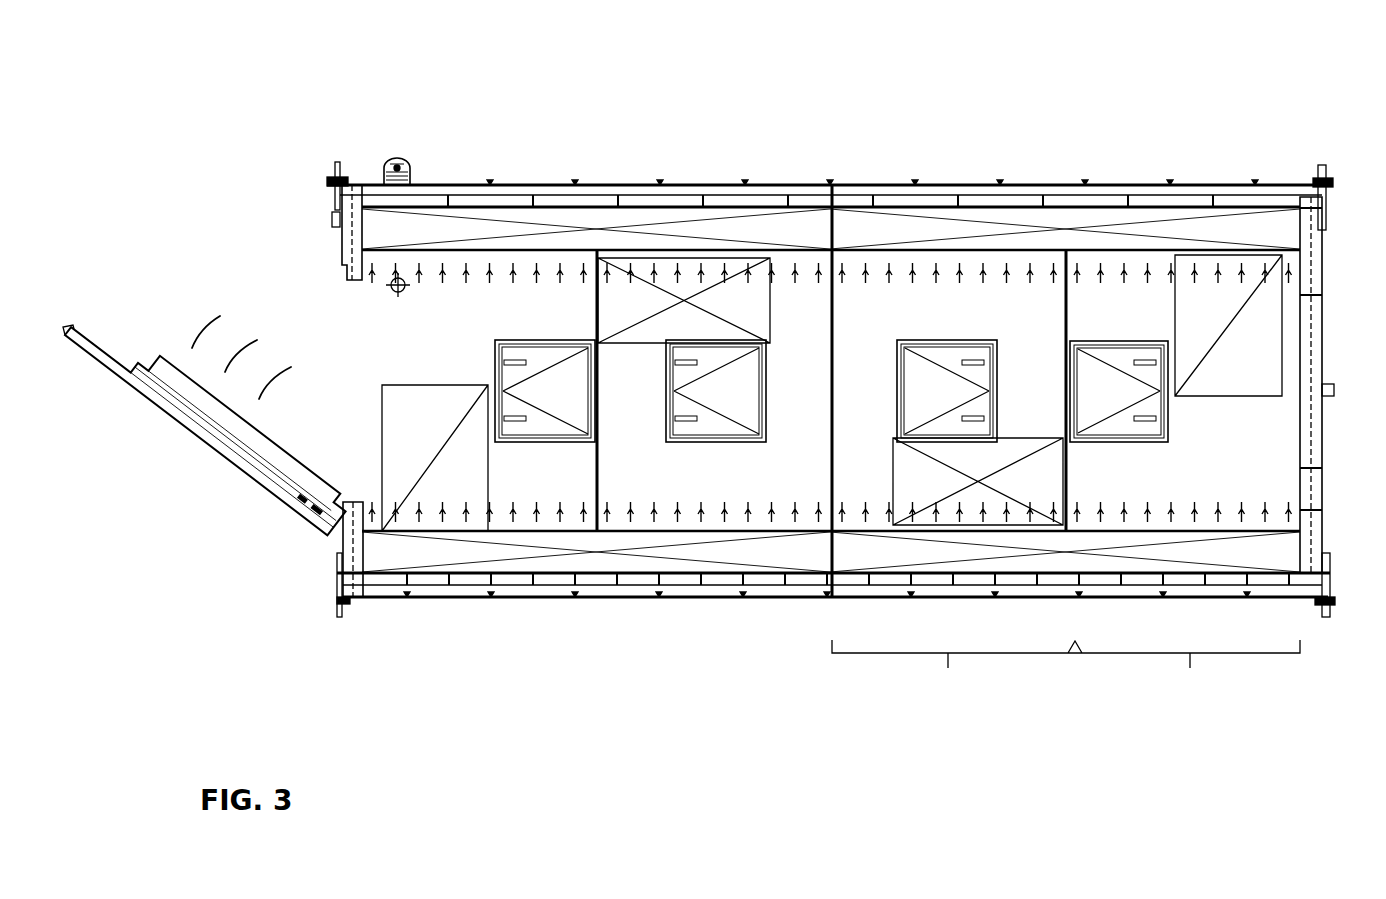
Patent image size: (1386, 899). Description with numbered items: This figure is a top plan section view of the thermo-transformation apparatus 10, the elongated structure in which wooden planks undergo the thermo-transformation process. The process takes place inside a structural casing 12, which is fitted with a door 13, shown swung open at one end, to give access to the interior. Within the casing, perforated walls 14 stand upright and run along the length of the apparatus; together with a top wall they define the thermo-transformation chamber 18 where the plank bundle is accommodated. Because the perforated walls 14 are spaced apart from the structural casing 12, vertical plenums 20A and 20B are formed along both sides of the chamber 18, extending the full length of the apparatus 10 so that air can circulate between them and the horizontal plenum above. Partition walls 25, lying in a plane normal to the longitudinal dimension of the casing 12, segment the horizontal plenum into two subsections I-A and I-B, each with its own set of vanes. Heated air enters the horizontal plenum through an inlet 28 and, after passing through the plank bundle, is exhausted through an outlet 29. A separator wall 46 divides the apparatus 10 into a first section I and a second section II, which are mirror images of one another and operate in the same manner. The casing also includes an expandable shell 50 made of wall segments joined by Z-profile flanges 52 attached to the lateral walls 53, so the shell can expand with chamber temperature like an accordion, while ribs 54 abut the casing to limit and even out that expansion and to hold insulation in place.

The thermo-transformation apparatus 10 is at (525, 92).
The structural casing 12 is at (722, 185).
The door 13 is at (208, 489).
The perforated walls 14 is at (618, 248).
The thermo-transformation chamber 18 is at (380, 322).
The vertical plenum 20A is at (400, 559).
The vertical plenum 20B is at (469, 208).
The partition walls 25 is at (1070, 340).
The inlet 28 is at (772, 322).
The outlet 29 is at (488, 470).
The separator wall 46 is at (830, 575).
The expandable shell 50 is at (1000, 190).
The flanges 52 is at (1095, 190).
The lateral walls 53 is at (905, 185).
The ribs 54 is at (699, 195).
The first section I is at (1048, 758).
The subsection I-A is at (944, 712).
The subsection I-B is at (1187, 712).
The second section II is at (618, 756).